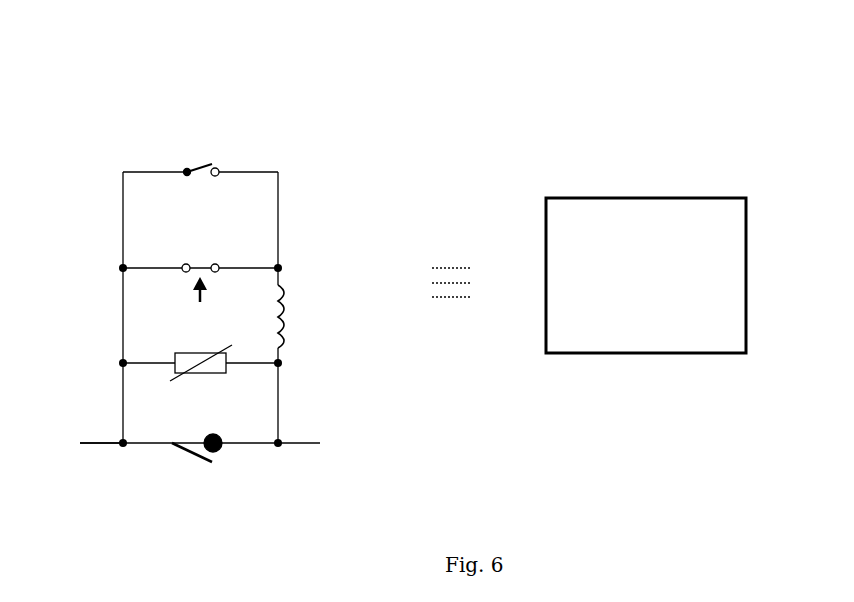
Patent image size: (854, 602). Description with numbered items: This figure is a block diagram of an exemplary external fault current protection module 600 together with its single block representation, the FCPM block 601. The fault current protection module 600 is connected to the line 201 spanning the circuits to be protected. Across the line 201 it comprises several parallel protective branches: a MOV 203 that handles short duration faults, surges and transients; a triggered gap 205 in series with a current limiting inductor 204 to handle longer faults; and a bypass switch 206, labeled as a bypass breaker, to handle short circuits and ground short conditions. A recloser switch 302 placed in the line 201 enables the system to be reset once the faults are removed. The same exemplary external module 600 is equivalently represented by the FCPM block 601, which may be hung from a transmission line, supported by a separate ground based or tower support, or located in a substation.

The external fault current protection module 600 is at (292, 128).
The FCPM block 601 is at (646, 198).
The line 201 is at (98, 447).
The MOV 203 is at (213, 383).
The current limiting inductor 204 is at (300, 313).
The triggered gap 205 is at (190, 284).
The bypass switch 206 is at (200, 185).
The recloser switch 302 is at (220, 462).